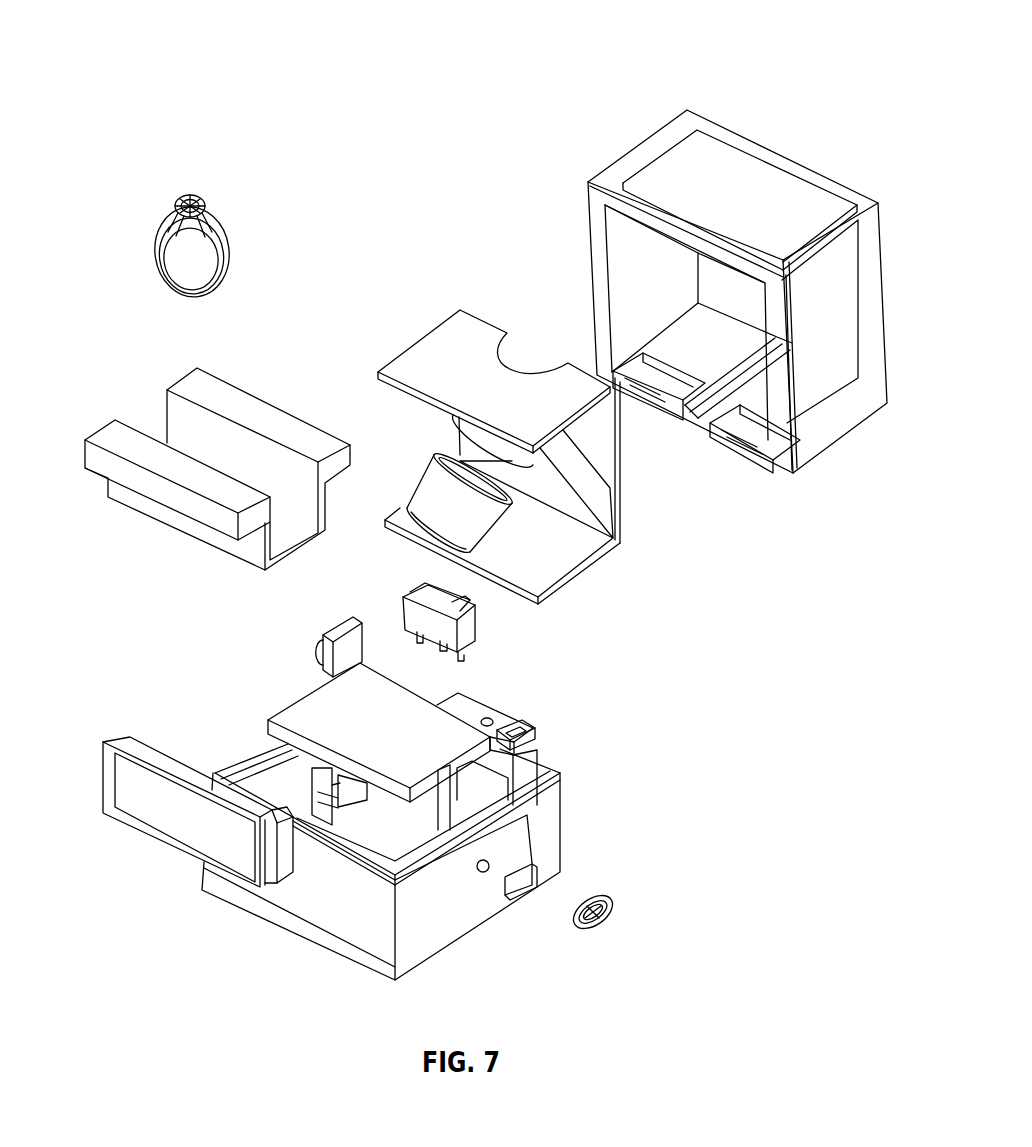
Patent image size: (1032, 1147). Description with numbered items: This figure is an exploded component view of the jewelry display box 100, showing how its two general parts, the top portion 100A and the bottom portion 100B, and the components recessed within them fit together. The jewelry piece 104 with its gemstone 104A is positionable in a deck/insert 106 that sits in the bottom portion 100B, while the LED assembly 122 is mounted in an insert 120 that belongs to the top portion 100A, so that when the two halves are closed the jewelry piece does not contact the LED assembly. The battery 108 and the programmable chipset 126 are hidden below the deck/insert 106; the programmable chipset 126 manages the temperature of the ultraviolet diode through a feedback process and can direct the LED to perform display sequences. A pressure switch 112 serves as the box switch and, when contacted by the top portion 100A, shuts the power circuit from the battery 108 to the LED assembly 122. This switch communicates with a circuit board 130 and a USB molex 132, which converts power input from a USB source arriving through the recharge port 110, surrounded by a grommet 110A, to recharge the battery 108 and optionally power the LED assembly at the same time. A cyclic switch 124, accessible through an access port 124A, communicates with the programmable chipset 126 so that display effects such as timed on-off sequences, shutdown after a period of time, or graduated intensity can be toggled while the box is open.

The box 100 is at (762, 42).
The top portion 100A is at (600, 232).
The bottom portion 100B is at (551, 838).
The jewelry piece 104 is at (154, 236).
The gemstone 104A is at (191, 193).
The deck/insert 106 is at (93, 443).
The battery 108 is at (303, 691).
The recharge port 110 is at (545, 879).
The grommet 110A is at (613, 909).
The pressure switch 112 is at (470, 638).
The insert 120 is at (425, 331).
The LED assembly 122 is at (430, 490).
The cyclic switch 124 is at (358, 626).
The access port 124A is at (337, 822).
The programmable chipset 126 is at (246, 853).
The circuit board 130 is at (483, 703).
The USB molex 132 is at (527, 728).